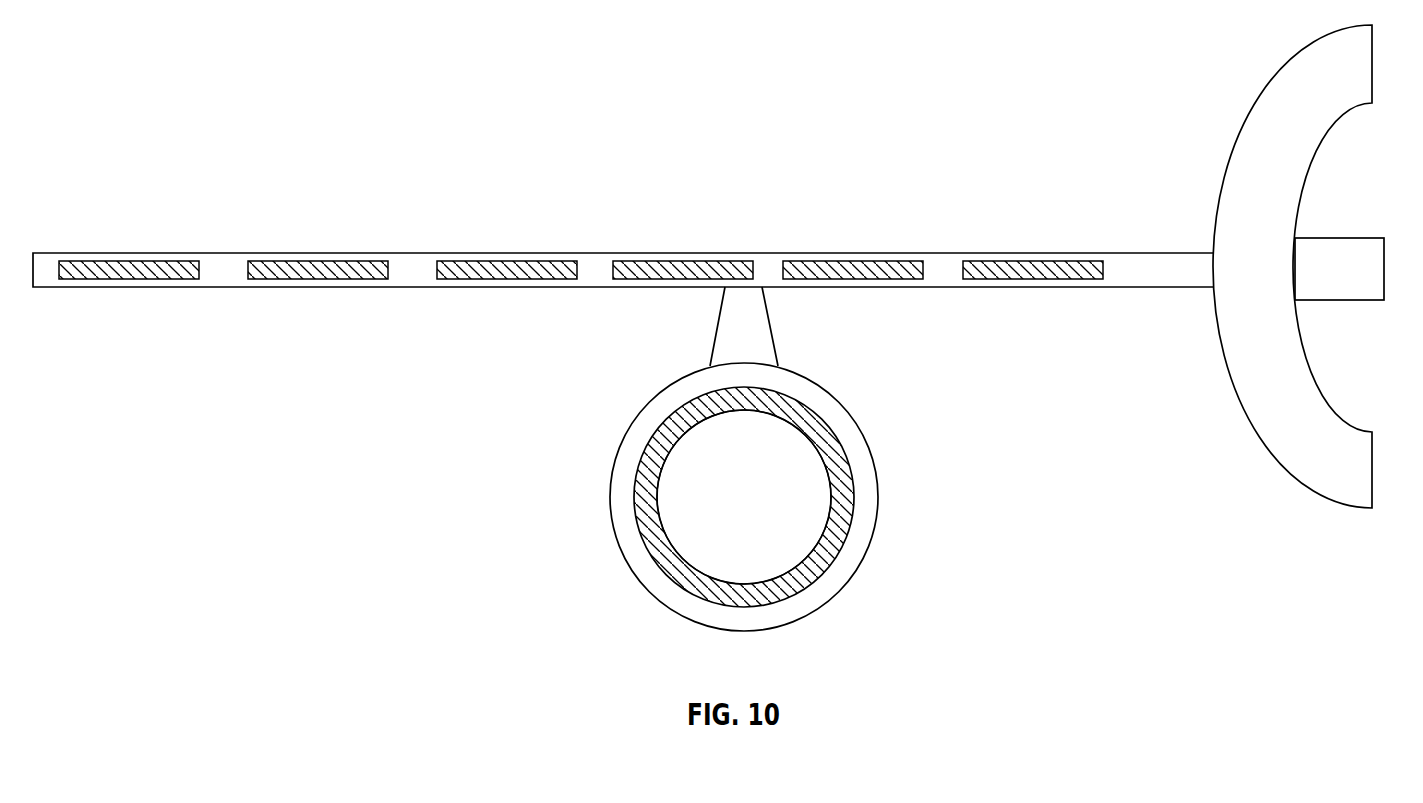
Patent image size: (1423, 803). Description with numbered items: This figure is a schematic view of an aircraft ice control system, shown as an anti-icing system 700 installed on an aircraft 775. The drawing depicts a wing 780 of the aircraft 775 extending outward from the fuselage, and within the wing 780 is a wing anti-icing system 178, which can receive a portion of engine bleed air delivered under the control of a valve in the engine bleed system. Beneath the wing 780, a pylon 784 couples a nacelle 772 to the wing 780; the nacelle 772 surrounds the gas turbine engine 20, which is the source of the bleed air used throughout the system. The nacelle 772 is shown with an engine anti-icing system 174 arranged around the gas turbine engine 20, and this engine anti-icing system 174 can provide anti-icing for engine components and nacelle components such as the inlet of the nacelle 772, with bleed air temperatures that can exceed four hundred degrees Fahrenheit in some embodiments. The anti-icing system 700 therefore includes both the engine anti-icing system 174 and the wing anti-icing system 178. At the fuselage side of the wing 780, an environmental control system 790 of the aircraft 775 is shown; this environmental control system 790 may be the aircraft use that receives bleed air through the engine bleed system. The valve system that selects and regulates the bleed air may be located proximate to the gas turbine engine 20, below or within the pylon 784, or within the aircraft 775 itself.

The anti-icing system 700 is at (667, 135).
The wing 780 is at (233, 288).
The wing anti-icing system 178 is at (148, 253).
The pylon 784 is at (773, 342).
The nacelle 772 is at (653, 590).
The engine anti-icing system 174 is at (837, 442).
The gas turbine engine 20 is at (757, 509).
The aircraft 775 is at (1292, 53).
The environmental control system 790 is at (1338, 238).